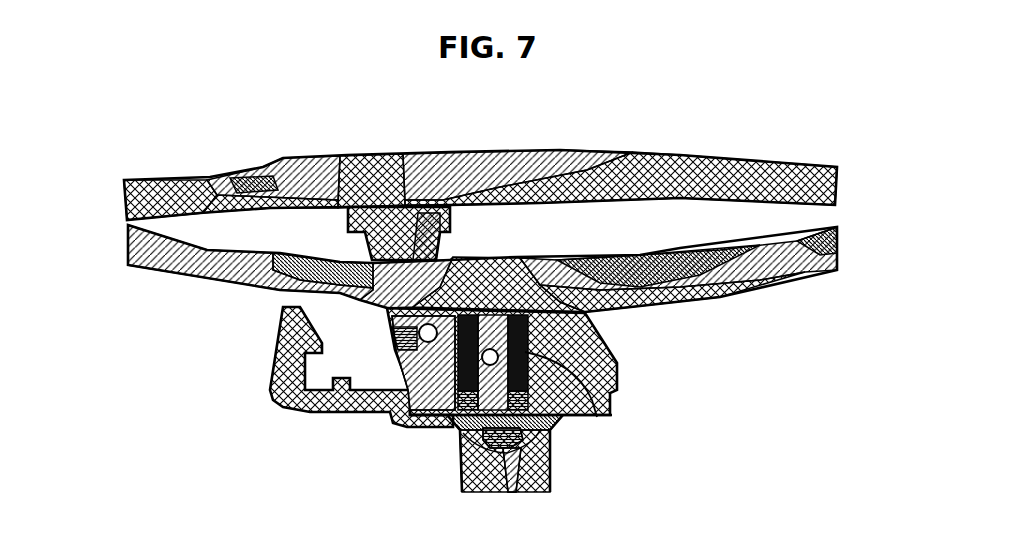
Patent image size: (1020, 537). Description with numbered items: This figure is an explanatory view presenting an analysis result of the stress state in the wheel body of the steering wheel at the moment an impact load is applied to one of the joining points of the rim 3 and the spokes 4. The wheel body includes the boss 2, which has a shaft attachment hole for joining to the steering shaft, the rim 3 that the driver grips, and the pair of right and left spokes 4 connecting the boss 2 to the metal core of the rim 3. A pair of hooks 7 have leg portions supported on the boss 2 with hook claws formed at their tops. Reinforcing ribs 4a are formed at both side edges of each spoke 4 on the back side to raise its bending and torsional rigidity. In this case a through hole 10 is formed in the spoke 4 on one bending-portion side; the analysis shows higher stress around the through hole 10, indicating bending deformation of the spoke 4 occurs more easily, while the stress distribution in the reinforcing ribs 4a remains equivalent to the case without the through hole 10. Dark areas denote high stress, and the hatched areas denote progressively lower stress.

The boss 2 is at (567, 433).
The rim 3 is at (678, 307).
The spoke 4 is at (387, 317).
The reinforcing rib 4a is at (597, 418).
The hook 7 is at (597, 342).
The through hole 10 is at (565, 261).